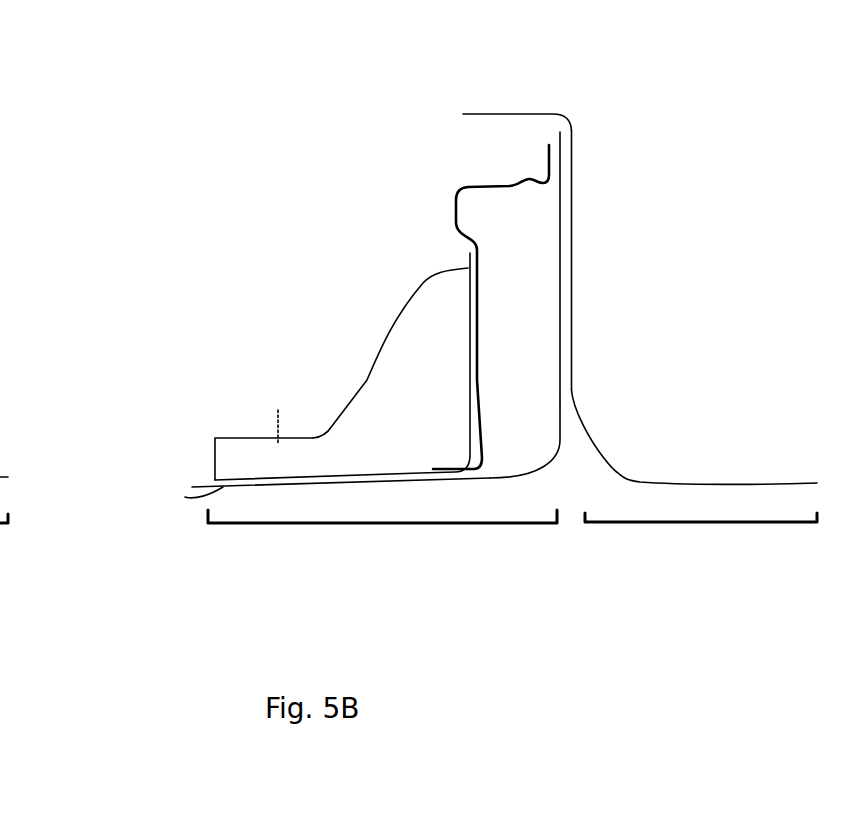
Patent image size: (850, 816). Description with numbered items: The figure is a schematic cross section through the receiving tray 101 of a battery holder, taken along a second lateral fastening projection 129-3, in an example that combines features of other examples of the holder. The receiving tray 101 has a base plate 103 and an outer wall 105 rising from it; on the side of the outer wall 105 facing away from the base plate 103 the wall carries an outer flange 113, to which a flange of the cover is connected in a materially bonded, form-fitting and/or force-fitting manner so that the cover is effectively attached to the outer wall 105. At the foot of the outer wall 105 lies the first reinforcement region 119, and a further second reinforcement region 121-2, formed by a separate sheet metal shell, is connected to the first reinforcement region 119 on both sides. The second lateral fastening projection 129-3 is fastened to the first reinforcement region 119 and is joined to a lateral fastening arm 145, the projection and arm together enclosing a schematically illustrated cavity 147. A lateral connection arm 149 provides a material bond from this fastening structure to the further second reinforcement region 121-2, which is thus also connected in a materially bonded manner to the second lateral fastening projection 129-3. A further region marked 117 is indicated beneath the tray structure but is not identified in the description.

The receiving tray 101 is at (700, 522).
The base plate 103 is at (697, 483).
The outer wall 105 is at (575, 280).
The outer flange 113 is at (512, 113).
The second region 117 is at (383, 523).
The first reinforcement region 119 is at (565, 430).
The further second reinforcement region 121-2 is at (463, 187).
The second lateral fastening projection 129-3 is at (185, 497).
The lateral fastening arm 145 is at (238, 437).
The cavity 147 is at (287, 406).
The lateral connection arm 149 is at (423, 283).